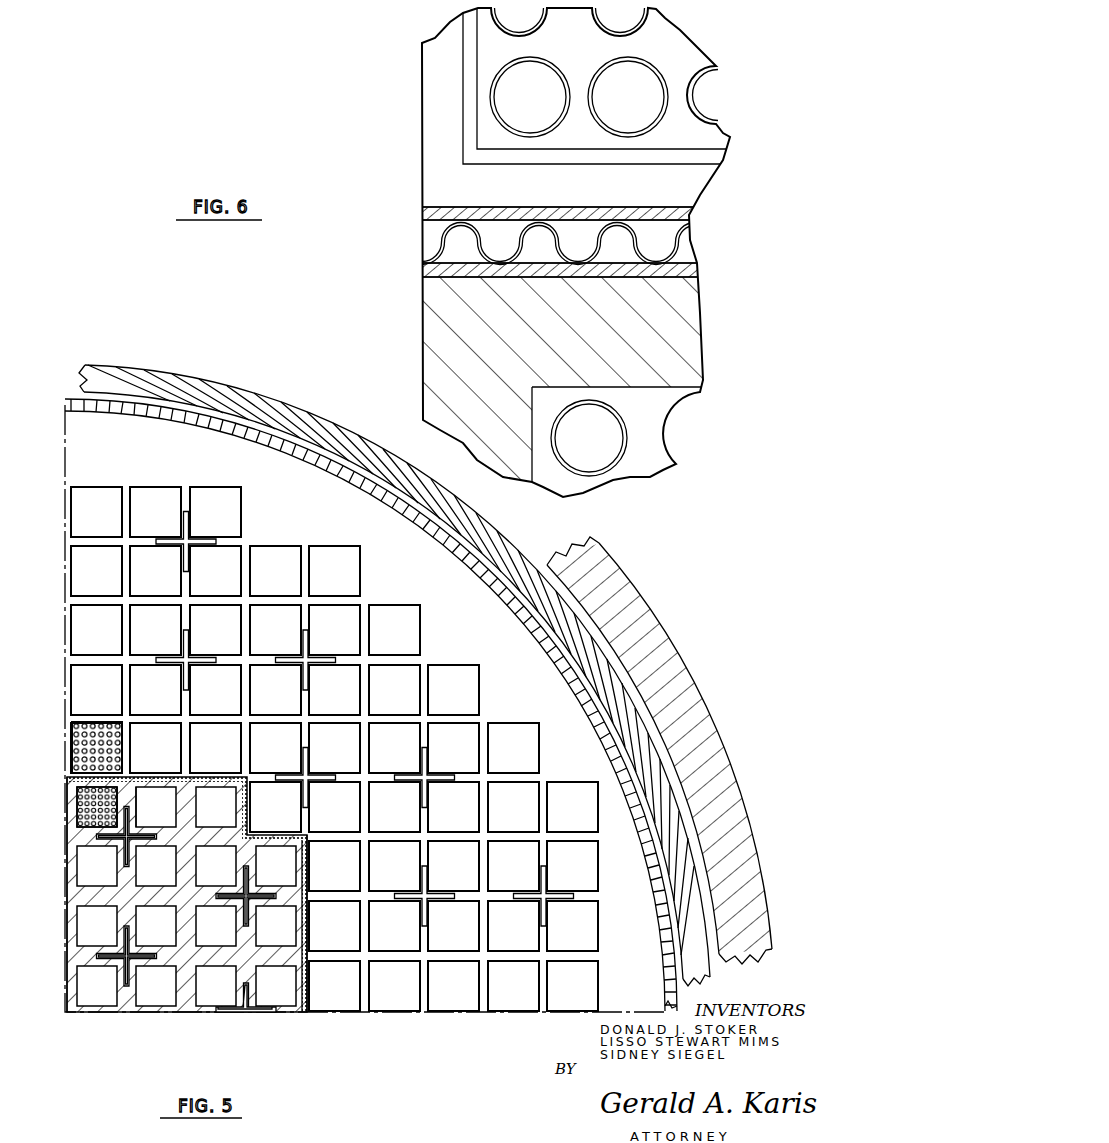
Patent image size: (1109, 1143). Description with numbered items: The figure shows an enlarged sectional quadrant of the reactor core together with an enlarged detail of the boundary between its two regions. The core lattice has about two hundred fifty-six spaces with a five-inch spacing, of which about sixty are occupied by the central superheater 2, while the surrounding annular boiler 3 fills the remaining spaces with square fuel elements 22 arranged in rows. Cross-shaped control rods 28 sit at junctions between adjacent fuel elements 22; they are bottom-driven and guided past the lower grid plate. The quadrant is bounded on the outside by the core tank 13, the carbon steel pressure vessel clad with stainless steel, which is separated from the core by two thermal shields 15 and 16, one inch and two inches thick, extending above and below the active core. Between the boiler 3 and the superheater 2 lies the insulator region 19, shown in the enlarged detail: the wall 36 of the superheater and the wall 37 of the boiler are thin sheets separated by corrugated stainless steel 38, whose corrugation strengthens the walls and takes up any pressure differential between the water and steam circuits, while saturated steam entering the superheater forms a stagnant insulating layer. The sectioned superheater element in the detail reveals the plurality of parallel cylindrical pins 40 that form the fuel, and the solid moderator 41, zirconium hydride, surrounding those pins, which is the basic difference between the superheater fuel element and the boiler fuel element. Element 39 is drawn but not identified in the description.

In FIG. 6, the superheater 2 is at (550, 353).
In FIG. 5, the superheater 2 is at (198, 888).
In FIG. 6, the boiler 3 is at (414, 107).
In FIG. 5, the core tank 13 is at (740, 827).
In FIG. 5, the thermal shield 15 is at (668, 825).
In FIG. 5, the thermal shield 16 is at (603, 732).
In FIG. 6, the insulator region 19 is at (414, 240).
In FIG. 5, the insulator region 19 is at (308, 876).
In FIG. 6, the fuel element 22 is at (462, 135).
In FIG. 5, the fuel element 22 is at (61, 719).
In FIG. 5, the control rod 28 is at (308, 644).
In FIG. 6, the wall of the superheater 36 is at (455, 268).
In FIG. 6, the wall of the boiler 37 is at (425, 212).
In FIG. 6, the corrugated stainless steel 38 is at (678, 238).
In FIG. 5, the corrugated stainless steel 38 is at (232, 777).
In FIG. 6, the perforated section 39 is at (482, 386).
In FIG. 5, the perforated section 39 is at (59, 813).
In FIG. 5, the cylindrical pins 40 is at (77, 797).
In FIG. 6, the solid moderator 41 is at (473, 410).
In FIG. 5, the solid moderator 41 is at (70, 874).